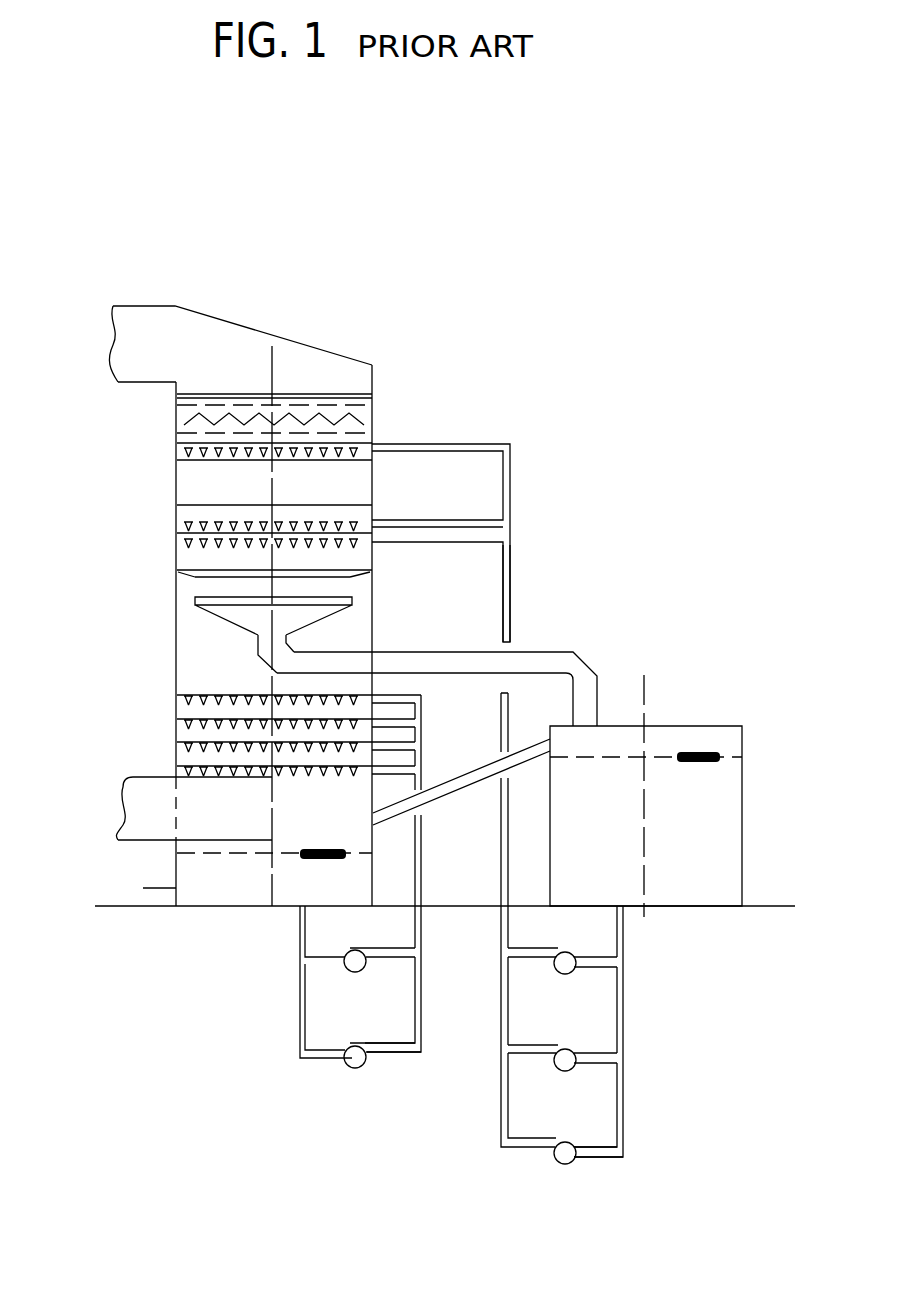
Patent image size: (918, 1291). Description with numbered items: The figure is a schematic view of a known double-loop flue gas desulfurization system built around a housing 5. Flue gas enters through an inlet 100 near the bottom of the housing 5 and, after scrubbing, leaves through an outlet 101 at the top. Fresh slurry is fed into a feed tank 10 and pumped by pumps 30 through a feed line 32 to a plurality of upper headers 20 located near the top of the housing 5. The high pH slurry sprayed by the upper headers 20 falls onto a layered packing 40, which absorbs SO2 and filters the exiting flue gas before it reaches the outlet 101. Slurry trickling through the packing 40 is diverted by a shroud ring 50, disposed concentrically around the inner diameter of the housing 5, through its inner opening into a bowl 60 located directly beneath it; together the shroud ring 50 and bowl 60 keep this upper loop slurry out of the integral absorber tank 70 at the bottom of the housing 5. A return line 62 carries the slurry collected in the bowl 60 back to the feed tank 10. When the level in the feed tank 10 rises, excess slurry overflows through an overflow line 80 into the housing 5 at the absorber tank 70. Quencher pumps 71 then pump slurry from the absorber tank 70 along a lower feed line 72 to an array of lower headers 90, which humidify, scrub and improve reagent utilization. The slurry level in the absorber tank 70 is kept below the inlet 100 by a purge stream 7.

The housing 5 is at (348, 316).
The outlet 101 is at (147, 328).
The packing 40 is at (193, 483).
The upper headers 20 is at (373, 520).
The feed line 32 is at (507, 560).
The shroud ring 50 is at (180, 574).
The bowl 60 is at (242, 613).
The return line 62 is at (535, 665).
The lower headers 90 is at (177, 695).
The lower feed line 72 is at (421, 885).
The inlet 100 is at (152, 806).
The integral absorber tank 70 is at (303, 878).
The quencher pumps 71 is at (351, 1046).
The purge stream 7 is at (158, 890).
The overflow line 80 is at (460, 778).
The feed tank 10 is at (715, 832).
The pumps 30 is at (574, 1143).